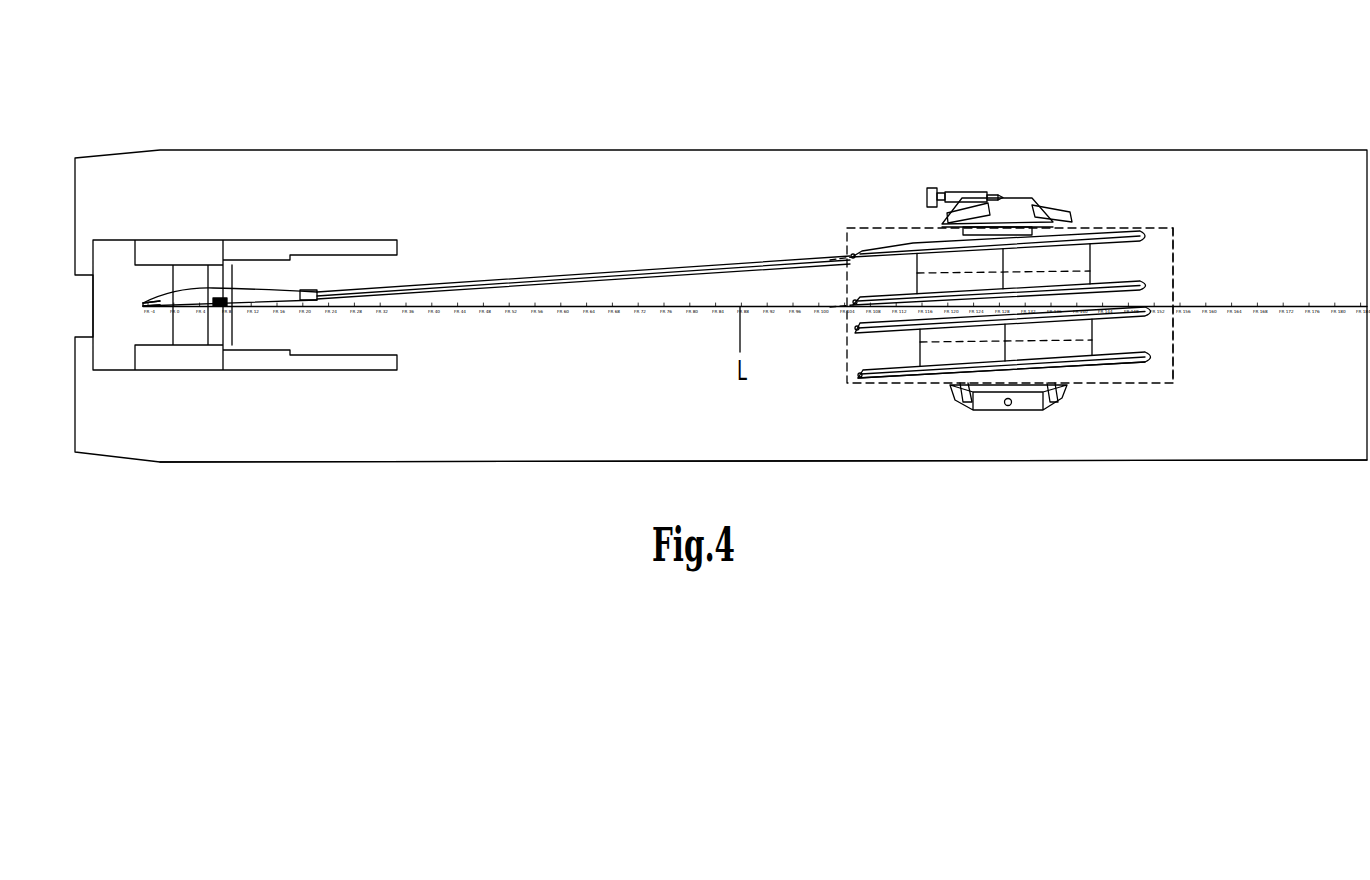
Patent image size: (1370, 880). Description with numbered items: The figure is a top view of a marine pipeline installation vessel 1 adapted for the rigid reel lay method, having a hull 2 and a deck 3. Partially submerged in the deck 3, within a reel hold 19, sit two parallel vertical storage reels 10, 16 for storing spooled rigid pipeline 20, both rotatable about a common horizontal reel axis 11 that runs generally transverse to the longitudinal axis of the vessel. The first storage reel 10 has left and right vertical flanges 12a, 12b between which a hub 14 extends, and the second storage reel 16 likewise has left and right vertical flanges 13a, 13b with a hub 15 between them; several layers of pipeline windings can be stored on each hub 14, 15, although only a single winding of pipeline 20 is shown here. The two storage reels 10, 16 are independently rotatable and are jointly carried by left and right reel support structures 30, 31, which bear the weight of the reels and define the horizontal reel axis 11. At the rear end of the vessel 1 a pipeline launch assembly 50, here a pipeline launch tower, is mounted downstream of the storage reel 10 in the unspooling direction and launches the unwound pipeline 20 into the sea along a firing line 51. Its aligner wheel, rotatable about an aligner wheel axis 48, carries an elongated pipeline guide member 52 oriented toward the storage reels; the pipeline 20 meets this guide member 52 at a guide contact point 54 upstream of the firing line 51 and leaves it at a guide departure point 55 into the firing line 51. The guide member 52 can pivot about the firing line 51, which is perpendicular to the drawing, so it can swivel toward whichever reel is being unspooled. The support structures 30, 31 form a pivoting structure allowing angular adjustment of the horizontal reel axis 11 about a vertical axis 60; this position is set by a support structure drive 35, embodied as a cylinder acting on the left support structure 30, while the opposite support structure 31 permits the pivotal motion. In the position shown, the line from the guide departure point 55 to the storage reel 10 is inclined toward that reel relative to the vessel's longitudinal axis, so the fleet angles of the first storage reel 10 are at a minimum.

The marine pipeline installation vessel 1 is at (721, 235).
The hull 2 is at (763, 480).
The deck 3 is at (705, 194).
The storage reel 10 is at (1021, 271).
The horizontal reel axis 11 is at (1008, 265).
The left vertical flange 12a is at (1137, 235).
The right vertical flange 12b is at (1137, 283).
The left vertical flange 13a is at (1137, 310).
The right vertical flange 13b is at (1137, 358).
The hub 14 is at (1003, 269).
The hub 15 is at (1006, 342).
The storage reel 16 is at (1001, 411).
The reel hold 19 is at (1192, 344).
The rigid pipeline 20 is at (624, 273).
The left reel support structure 30 is at (1031, 197).
The right reel support structure 31 is at (1031, 422).
The support structure drive 35 is at (975, 192).
The aligner wheel axis 48 is at (222, 303).
The pipeline launch assembly 50 is at (245, 267).
The firing line 51 is at (142, 303).
The pipeline guide member 52 is at (257, 290).
The guide contact point 54 is at (317, 295).
The guide departure point 55 is at (151, 303).
The vertical axis 60 is at (1005, 403).